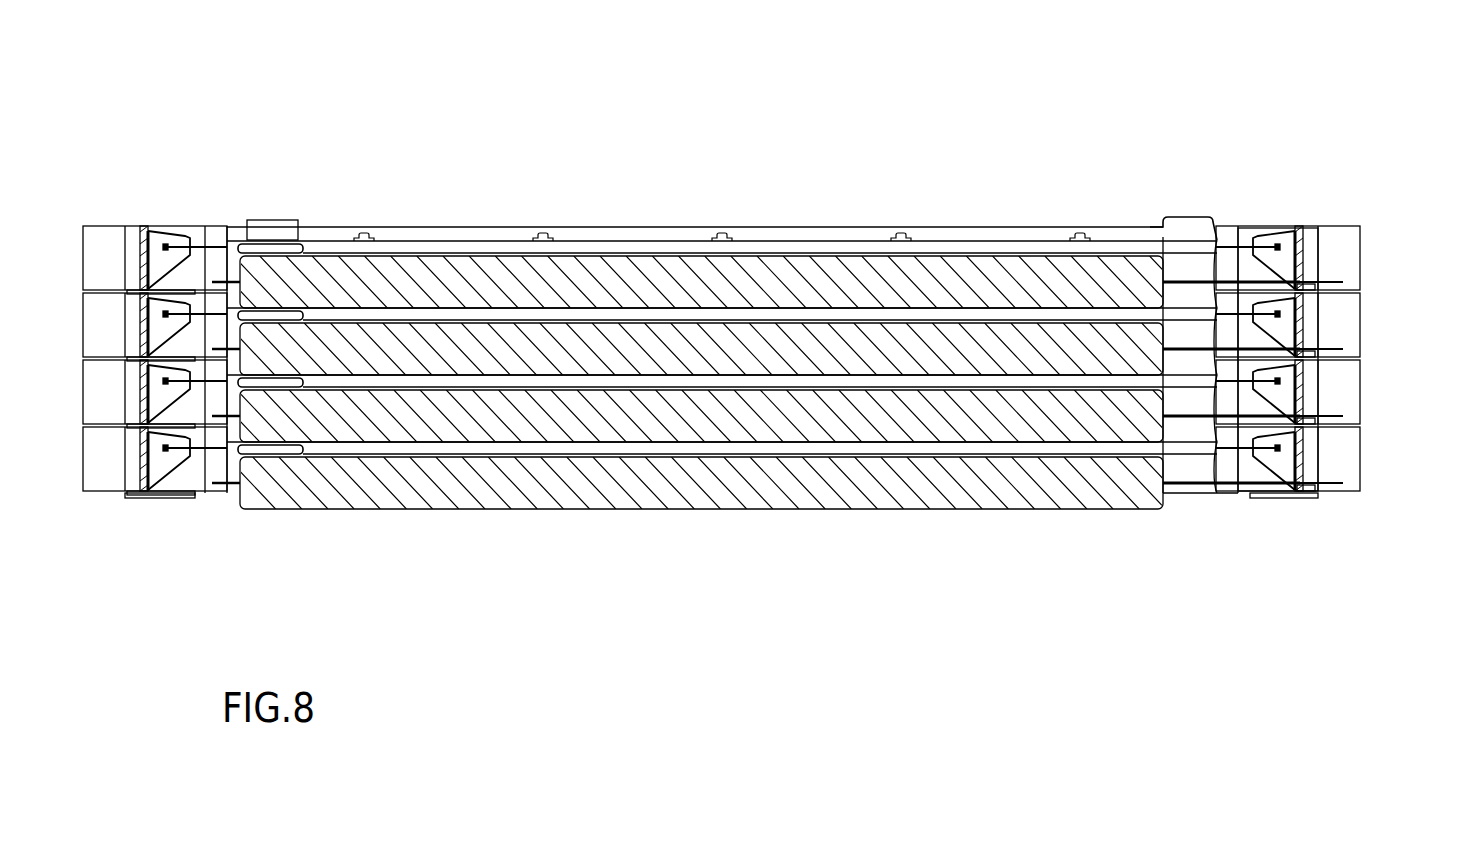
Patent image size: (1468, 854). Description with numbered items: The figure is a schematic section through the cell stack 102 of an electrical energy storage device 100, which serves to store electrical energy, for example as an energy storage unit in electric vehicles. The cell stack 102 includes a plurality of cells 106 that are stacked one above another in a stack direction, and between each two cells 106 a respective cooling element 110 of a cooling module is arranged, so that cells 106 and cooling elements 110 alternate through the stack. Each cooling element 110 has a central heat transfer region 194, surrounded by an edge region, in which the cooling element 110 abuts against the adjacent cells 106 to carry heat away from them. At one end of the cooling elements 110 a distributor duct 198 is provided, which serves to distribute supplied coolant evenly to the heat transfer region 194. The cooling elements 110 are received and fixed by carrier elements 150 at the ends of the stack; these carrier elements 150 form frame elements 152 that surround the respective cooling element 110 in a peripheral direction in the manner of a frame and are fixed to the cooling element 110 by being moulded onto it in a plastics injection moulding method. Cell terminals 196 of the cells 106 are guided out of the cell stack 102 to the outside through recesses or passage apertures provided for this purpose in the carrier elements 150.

The electrical energy storage device 100 is at (727, 152).
The cell stack 102 is at (827, 162).
The cells 106 is at (782, 487).
The cooling element 110 is at (472, 455).
The carrier elements 150 is at (1347, 240).
The frame elements 152 is at (1350, 262).
The heat transfer region 194 is at (938, 235).
The cell terminals 196 is at (1335, 477).
The distributor duct 198 is at (1202, 225).